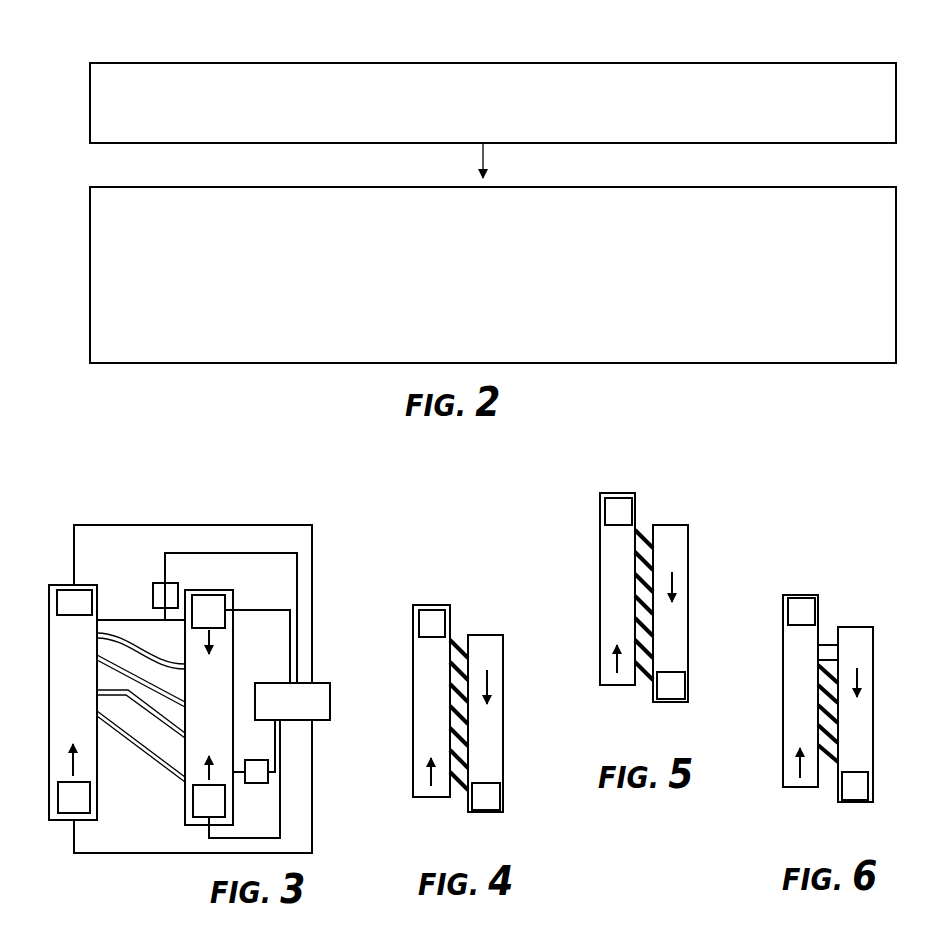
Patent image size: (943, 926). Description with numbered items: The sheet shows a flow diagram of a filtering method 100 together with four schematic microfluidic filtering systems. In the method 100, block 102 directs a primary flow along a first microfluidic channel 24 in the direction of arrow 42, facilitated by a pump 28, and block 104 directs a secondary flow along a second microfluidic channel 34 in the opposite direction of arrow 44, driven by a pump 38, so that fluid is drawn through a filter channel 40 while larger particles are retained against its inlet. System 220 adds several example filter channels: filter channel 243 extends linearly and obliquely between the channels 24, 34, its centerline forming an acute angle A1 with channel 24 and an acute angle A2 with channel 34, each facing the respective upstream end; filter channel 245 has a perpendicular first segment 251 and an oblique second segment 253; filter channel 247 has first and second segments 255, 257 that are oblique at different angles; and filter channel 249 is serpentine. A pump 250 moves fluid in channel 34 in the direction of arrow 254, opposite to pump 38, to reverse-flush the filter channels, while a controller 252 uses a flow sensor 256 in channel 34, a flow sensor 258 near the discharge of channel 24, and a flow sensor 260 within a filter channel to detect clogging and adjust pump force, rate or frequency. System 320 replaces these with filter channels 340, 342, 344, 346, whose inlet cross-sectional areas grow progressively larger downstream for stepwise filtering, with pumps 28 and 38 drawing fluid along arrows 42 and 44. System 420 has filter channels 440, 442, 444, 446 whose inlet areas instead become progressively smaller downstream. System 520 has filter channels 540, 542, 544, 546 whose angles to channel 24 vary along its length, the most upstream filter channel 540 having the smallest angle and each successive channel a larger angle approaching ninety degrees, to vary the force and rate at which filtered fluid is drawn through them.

In FIG. 2, the method 100 is at (114, 47).
In FIG. 2, the block 102 is at (90, 95).
In FIG. 2, the block 104 is at (90, 245).
In FIG. 3, the microfluidic filtering system 220 is at (50, 533).
In FIG. 3, the first microfluidic channel 24 is at (49, 652).
In FIG. 4, the first microfluidic channel 24 is at (413, 688).
In FIG. 5, the first microfluidic channel 24 is at (640, 630).
In FIG. 6, the first microfluidic channel 24 is at (783, 742).
In FIG. 3, the pump 28 is at (58, 797).
In FIG. 4, the pump 28 is at (419, 625).
In FIG. 5, the pump 28 is at (605, 513).
In FIG. 6, the pump 28 is at (788, 613).
In FIG. 3, the second microfluidic channel 34 is at (233, 678).
In FIG. 4, the second microfluidic channel 34 is at (503, 755).
In FIG. 5, the second microfluidic channel 34 is at (688, 545).
In FIG. 6, the second microfluidic channel 34 is at (873, 643).
In FIG. 3, the pump 38 is at (222, 595).
In FIG. 4, the pump 38 is at (500, 797).
In FIG. 5, the pump 38 is at (685, 685).
In FIG. 6, the pump 38 is at (868, 787).
In FIG. 3, the filter channel 40 is at (137, 620).
In FIG. 3, the arrow 42 is at (68, 762).
In FIG. 4, the arrow 42 is at (428, 775).
In FIG. 5, the arrow 42 is at (615, 665).
In FIG. 6, the arrow 42 is at (798, 765).
In FIG. 3, the arrow 44 is at (215, 650).
In FIG. 4, the arrow 44 is at (497, 695).
In FIG. 5, the arrow 44 is at (682, 595).
In FIG. 6, the arrow 44 is at (865, 690).
In FIG. 3, the filter channel 243 is at (153, 735).
In FIG. 3, the filter channel 245 is at (127, 711).
In FIG. 3, the filter channel 247 is at (167, 658).
In FIG. 3, the filter channel 249 is at (157, 666).
In FIG. 3, the first segment 251 is at (104, 668).
In FIG. 3, the second segment 253 is at (178, 728).
In FIG. 3, the first segment 255 is at (105, 640).
In FIG. 3, the second segment 257 is at (178, 702).
In FIG. 3, the pump 250 is at (193, 802).
In FIG. 3, the controller 252 is at (322, 683).
In FIG. 3, the arrow 254 is at (185, 795).
In FIG. 3, the flow sensor 256 is at (257, 783).
In FIG. 3, the flow sensor 258 is at (86, 590).
In FIG. 3, the flow sensor 260 is at (172, 583).
In FIG. 3, the acute angle A1 is at (129, 748).
In FIG. 3, the acute angle A2 is at (150, 736).
In FIG. 4, the microfluidic filtering system 320 is at (449, 571).
In FIG. 4, the filter channel 340 is at (462, 785).
In FIG. 4, the filter channel 342 is at (455, 738).
In FIG. 4, the filter channel 344 is at (455, 700).
In FIG. 4, the filter channel 346 is at (455, 645).
In FIG. 5, the microfluidic filtering system 420 is at (661, 456).
In FIG. 5, the filter channel 440 is at (650, 678).
In FIG. 5, the filter channel 442 is at (648, 615).
In FIG. 5, the filter channel 444 is at (640, 565).
In FIG. 5, the filter channel 446 is at (640, 535).
In FIG. 6, the microfluidic filtering system 520 is at (826, 563).
In FIG. 6, the filter channel 540 is at (833, 758).
In FIG. 6, the filter channel 542 is at (830, 725).
In FIG. 6, the filter channel 544 is at (825, 672).
In FIG. 6, the filter channel 546 is at (823, 645).